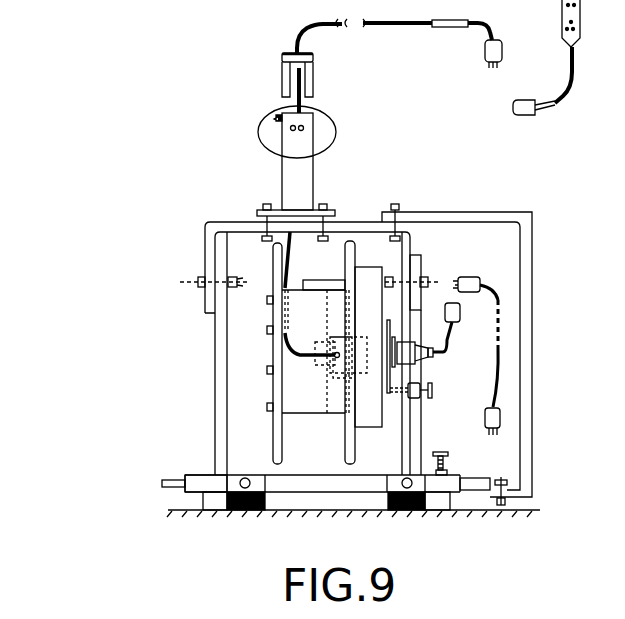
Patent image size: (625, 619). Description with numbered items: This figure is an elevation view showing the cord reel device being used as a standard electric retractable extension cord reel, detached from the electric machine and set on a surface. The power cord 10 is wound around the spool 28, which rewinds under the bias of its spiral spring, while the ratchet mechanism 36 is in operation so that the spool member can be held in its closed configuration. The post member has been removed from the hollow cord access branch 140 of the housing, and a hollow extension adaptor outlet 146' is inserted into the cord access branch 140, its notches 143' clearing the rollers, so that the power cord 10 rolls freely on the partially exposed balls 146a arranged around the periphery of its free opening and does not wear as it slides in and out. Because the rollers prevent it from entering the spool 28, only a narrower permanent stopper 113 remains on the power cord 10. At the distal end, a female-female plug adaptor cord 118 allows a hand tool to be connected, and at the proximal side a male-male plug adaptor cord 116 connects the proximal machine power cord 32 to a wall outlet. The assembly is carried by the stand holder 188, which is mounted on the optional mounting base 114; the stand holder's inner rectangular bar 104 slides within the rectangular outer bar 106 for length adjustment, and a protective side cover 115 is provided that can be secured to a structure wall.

The power cord 10 is at (286, 98).
The spool 28 is at (351, 243).
The proximal machine power cord 32 is at (445, 363).
The ratchet mechanism 36 is at (434, 391).
The inner rectangular bar 104 is at (475, 487).
The rectangular outer bar 106 is at (197, 482).
The permanent stopper 113 is at (448, 28).
The mounting base 114 is at (265, 503).
The protective side cover 115 is at (533, 263).
The male-male plug adaptor cord 116 is at (498, 278).
The female-female plug adaptor cord 118 is at (560, 87).
The cord access branch 140 is at (311, 183).
The notches 143' is at (329, 87).
The hollow extension adaptor outlet 146' is at (332, 54).
The partially exposed balls 146a is at (289, 52).
The stand holder 188 is at (180, 470).